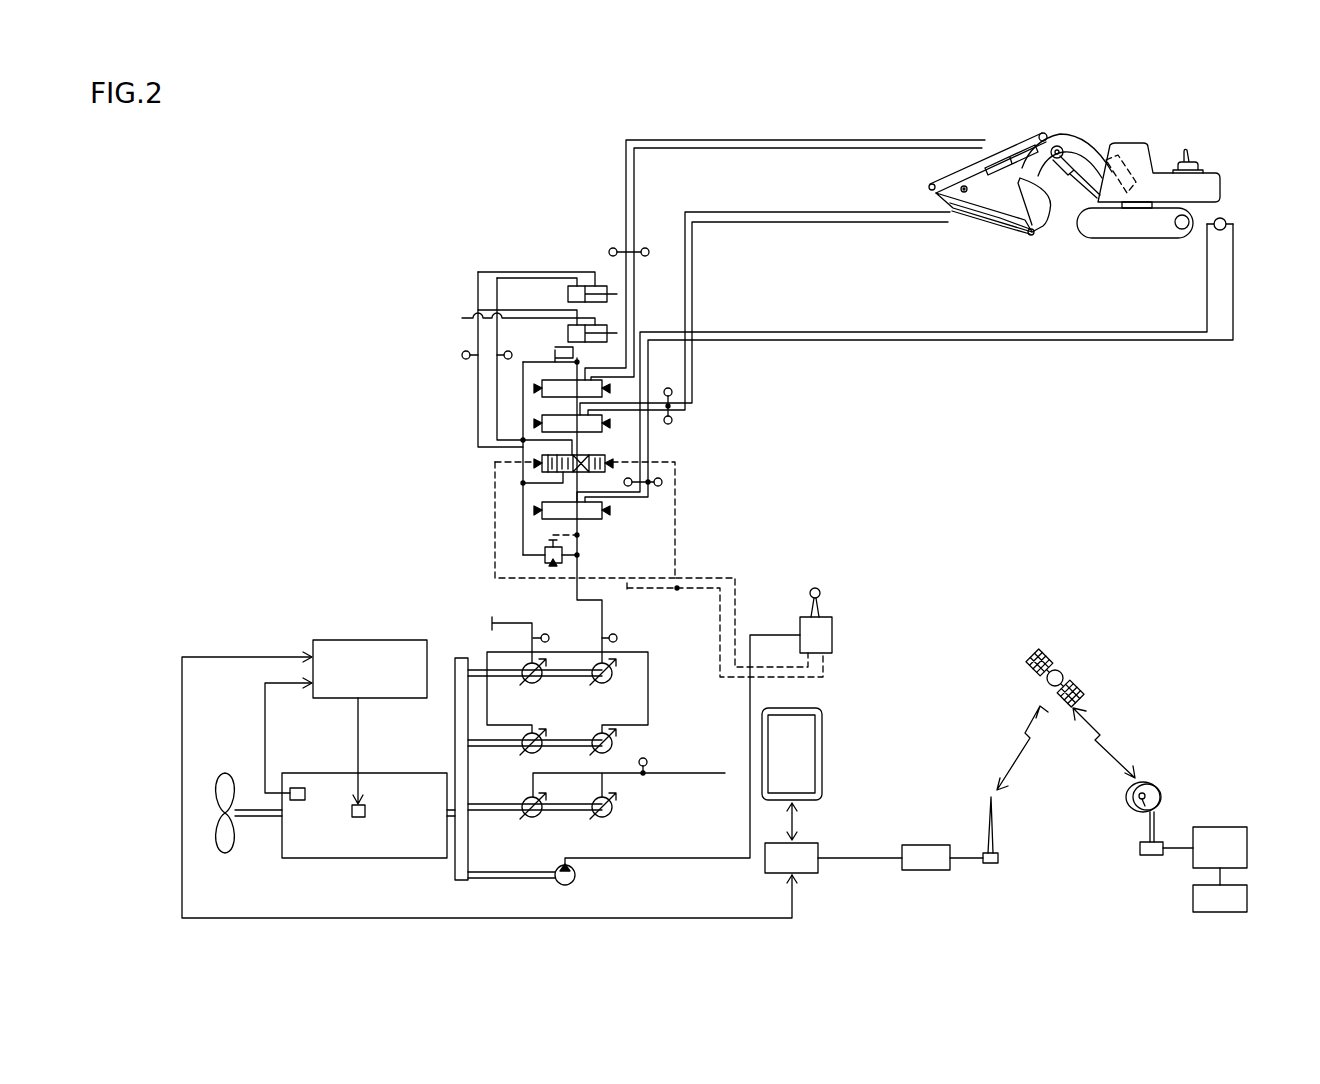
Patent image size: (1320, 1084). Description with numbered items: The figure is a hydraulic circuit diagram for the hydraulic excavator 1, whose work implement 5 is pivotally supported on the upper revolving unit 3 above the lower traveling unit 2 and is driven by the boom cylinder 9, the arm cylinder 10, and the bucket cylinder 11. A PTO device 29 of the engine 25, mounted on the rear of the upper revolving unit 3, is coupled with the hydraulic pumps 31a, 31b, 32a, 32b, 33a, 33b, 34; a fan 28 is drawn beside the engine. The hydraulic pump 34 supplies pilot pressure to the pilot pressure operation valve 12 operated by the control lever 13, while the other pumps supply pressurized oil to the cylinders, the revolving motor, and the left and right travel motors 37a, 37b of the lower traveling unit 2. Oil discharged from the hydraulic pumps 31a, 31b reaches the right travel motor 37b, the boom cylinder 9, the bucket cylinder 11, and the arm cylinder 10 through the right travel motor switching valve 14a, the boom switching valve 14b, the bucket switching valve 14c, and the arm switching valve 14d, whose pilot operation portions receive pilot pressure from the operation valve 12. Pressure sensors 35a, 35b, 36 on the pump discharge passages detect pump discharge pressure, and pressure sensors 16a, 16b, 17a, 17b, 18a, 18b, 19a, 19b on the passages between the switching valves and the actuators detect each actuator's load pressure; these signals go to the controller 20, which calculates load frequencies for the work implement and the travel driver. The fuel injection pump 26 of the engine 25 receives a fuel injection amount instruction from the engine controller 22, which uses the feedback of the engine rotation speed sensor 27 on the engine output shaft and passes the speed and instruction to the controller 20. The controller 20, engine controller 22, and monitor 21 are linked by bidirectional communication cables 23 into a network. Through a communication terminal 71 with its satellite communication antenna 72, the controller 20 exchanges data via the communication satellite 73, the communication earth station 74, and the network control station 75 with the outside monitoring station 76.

The hydraulic excavator 1 is at (932, 216).
The lower traveling unit 2 is at (1117, 238).
The upper revolving unit 3 is at (1222, 191).
The work implement 5 is at (1092, 134).
The boom cylinder 9 is at (1082, 181).
The arm cylinder 10 is at (994, 152).
The bucket cylinder 11 is at (965, 214).
The pilot pressure operation valve 12 is at (833, 633).
The control lever 13 is at (821, 592).
The right travel motor switching valve 14a is at (548, 522).
The boom switching valve 14b is at (548, 475).
The bucket switching valve 14c is at (548, 418).
The arm switching valve 14d is at (548, 383).
The pressure sensor 16a is at (662, 481).
The pressure sensor 16b is at (628, 486).
The pressure sensor 17a is at (672, 421).
The pressure sensor 17b is at (672, 391).
The pressure sensor 18a is at (648, 249).
The pressure sensor 18b is at (611, 249).
The pressure sensor 19a is at (506, 351).
The pressure sensor 19b is at (462, 354).
The controller 20 is at (820, 848).
The monitor 21 is at (823, 775).
The engine controller 22 is at (373, 640).
The bidirectional communication cable 23 is at (797, 820).
The engine 25 is at (405, 773).
The fuel injection pump 26 is at (358, 817).
The engine rotation speed sensor 27 is at (298, 788).
The cooling fan 28 is at (226, 773).
The PTO device 29 is at (463, 658).
The hydraulic pump 31a is at (608, 685).
The hydraulic pump 31b is at (612, 745).
The hydraulic pump 32a is at (538, 685).
The hydraulic pump 32b is at (528, 752).
The hydraulic pump 33a is at (610, 818).
The hydraulic pump 33b is at (540, 818).
The hydraulic pump 34 is at (573, 882).
The pressure sensor 35a is at (617, 636).
The pressure sensor 35b is at (545, 634).
The pressure sensor 36 is at (647, 762).
The left travel motor 37a is at (1180, 230).
The right travel motor 37b is at (1226, 220).
The communication terminal 71 is at (925, 870).
The satellite communication antenna 72 is at (992, 866).
The communication satellite 73 is at (1038, 657).
The communication earth station 74 is at (1130, 806).
The network control station 75 is at (1248, 845).
The monitoring station 76 is at (1248, 897).